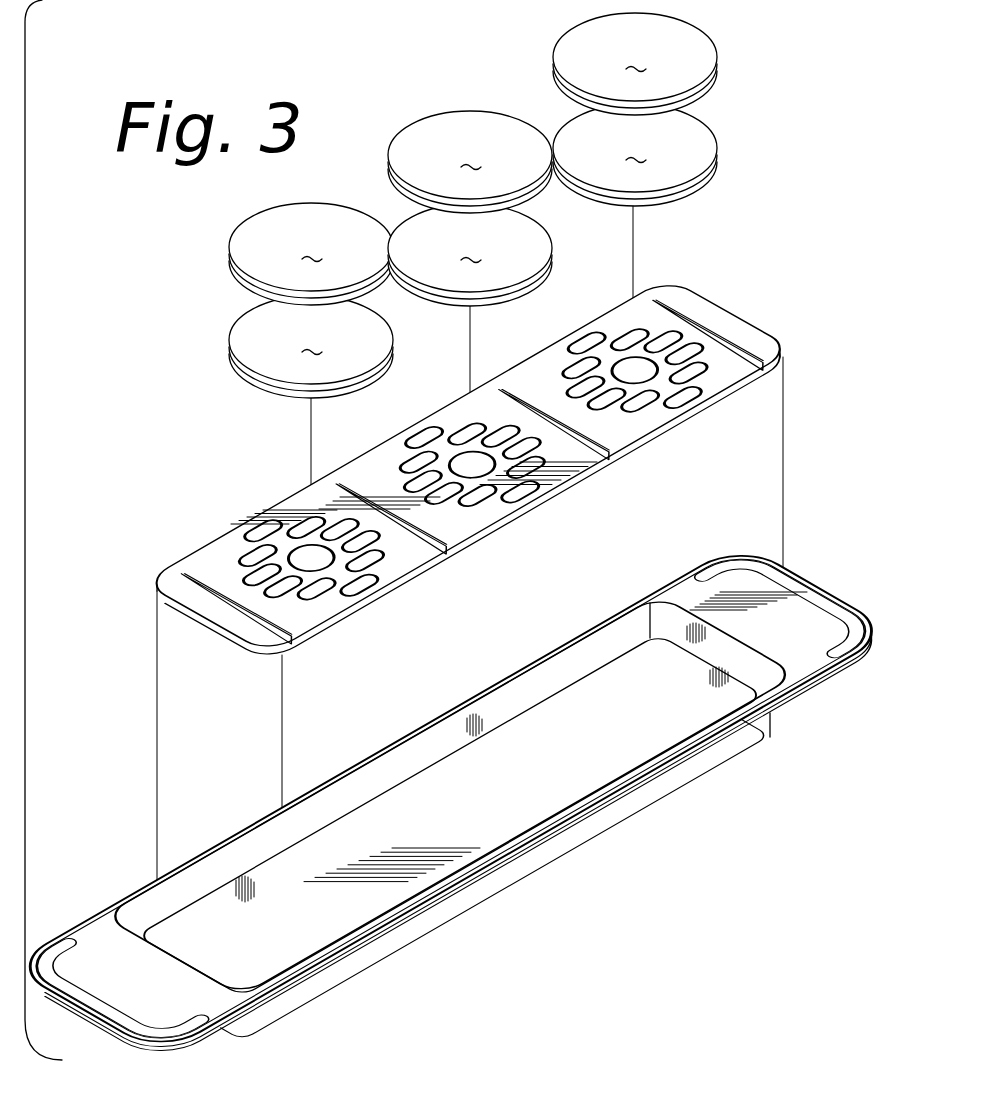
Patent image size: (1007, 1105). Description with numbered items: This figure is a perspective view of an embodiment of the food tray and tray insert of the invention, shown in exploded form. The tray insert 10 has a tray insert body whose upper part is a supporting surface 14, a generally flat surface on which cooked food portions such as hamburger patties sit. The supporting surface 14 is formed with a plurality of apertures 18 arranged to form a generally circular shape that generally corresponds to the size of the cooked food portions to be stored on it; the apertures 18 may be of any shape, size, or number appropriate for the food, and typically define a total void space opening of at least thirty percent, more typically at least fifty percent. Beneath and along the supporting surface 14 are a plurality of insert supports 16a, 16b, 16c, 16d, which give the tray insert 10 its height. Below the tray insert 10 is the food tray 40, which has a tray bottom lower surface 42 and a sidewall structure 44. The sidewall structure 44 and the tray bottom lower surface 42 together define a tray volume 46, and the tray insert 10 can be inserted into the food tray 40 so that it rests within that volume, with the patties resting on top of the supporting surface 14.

The tray insert 10 is at (740, 279).
The supporting surface 14 is at (687, 374).
The insert support 16a is at (283, 657).
The insert support 16b is at (418, 545).
The insert support 16c is at (628, 428).
The insert support 16d is at (741, 360).
The apertures 18 is at (262, 524).
The food tray 40 is at (822, 550).
The tray bottom lower surface 42 is at (545, 786).
The sidewall structure 44 is at (712, 765).
The tray volume 46 is at (350, 903).